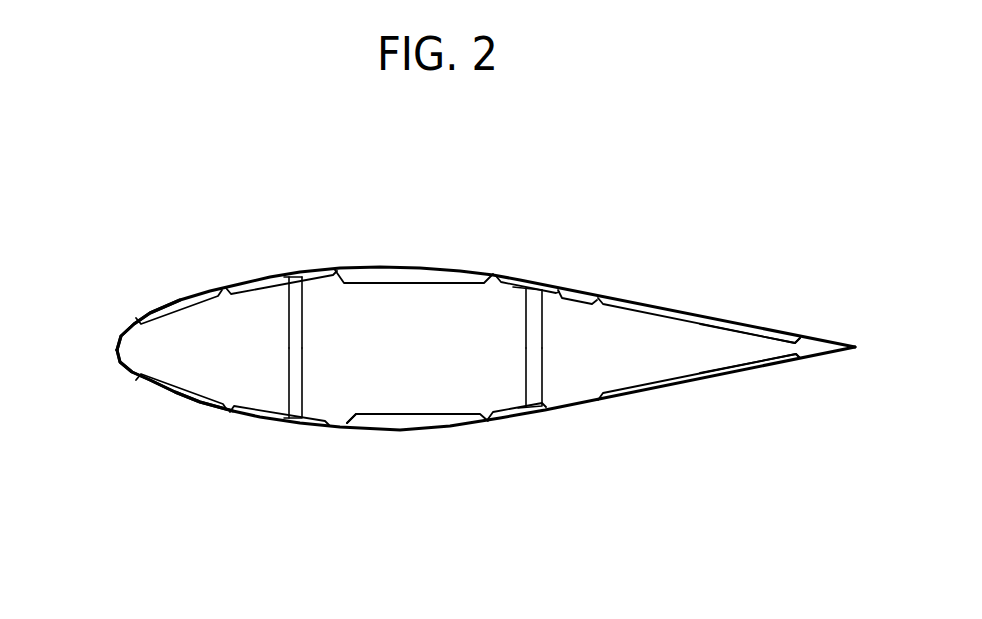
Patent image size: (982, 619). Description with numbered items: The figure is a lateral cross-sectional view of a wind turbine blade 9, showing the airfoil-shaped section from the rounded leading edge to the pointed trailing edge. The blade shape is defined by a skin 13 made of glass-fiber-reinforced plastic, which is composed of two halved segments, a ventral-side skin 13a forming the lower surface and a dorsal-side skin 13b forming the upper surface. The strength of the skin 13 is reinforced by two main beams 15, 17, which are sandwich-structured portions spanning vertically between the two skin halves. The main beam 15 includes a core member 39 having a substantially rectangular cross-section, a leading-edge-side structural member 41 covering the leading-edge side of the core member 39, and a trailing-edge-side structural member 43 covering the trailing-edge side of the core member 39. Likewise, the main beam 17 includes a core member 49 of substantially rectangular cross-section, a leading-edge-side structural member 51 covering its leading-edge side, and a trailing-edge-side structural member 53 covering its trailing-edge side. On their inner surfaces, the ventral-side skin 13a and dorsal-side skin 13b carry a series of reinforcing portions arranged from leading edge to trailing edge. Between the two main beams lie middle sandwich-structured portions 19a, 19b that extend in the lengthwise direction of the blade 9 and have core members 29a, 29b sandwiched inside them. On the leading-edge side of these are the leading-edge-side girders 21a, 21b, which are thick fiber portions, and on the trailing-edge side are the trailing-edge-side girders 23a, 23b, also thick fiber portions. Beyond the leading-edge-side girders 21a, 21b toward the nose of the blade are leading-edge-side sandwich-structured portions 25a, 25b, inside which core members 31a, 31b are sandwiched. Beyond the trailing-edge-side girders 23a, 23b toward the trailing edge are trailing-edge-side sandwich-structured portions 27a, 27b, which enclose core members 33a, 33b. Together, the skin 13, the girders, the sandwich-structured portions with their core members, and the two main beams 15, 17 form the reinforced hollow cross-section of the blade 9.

The wind turbine blade 9 is at (552, 203).
The skin 13 is at (697, 314).
The ventral-side skin 13a is at (578, 405).
The dorsal-side skin 13b is at (790, 334).
The main beam 15 is at (304, 378).
The main beam 17 is at (545, 382).
The middle sandwich-structured portion 19a is at (425, 420).
The middle sandwich-structured portion 19b is at (413, 278).
The leading-edge-side girder 21a is at (352, 424).
The leading-edge-side girder 21b is at (255, 280).
The trailing-edge-side girder 23a is at (486, 418).
The trailing-edge-side girder 23b is at (563, 288).
The leading-edge-side sandwich-structured portion 25a is at (162, 392).
The leading-edge-side sandwich-structured portion 25b is at (193, 290).
The trailing-edge-side sandwich-structured portion 27a is at (644, 392).
The trailing-edge-side sandwich-structured portion 27b is at (643, 302).
The core member 29a is at (377, 426).
The core member 29b is at (476, 279).
The core member 31a is at (207, 410).
The core member 31b is at (170, 303).
The core member 33a is at (715, 375).
The core member 33b is at (741, 328).
The core member 39 is at (287, 323).
The leading-edge-side structural member 41 is at (287, 372).
The trailing-edge-side structural member 43 is at (304, 325).
The core member 49 is at (524, 322).
The leading-edge-side structural member 51 is at (524, 370).
The trailing-edge-side structural member 53 is at (545, 336).